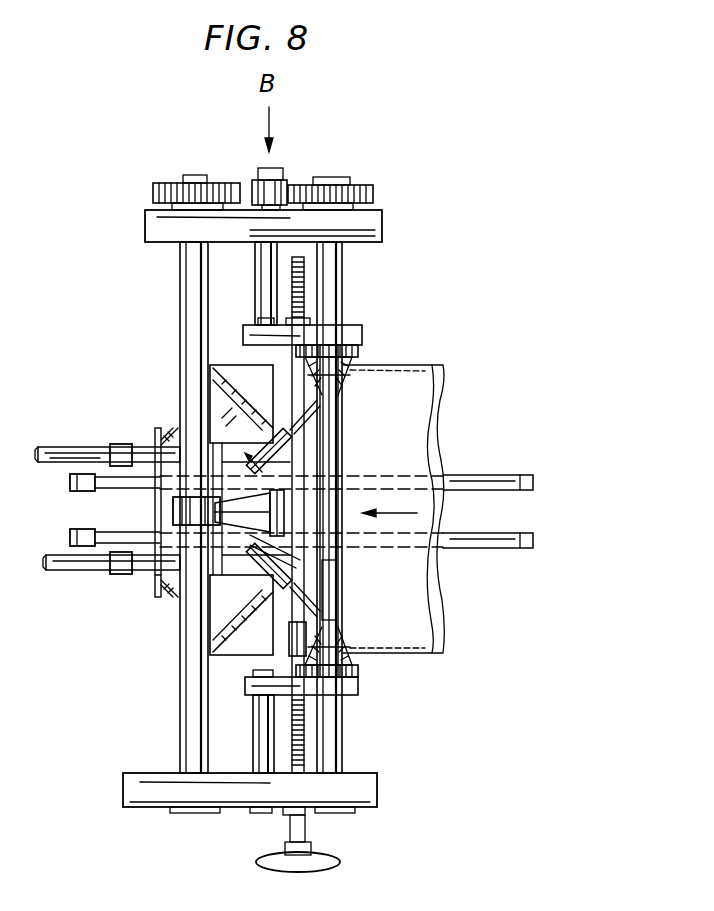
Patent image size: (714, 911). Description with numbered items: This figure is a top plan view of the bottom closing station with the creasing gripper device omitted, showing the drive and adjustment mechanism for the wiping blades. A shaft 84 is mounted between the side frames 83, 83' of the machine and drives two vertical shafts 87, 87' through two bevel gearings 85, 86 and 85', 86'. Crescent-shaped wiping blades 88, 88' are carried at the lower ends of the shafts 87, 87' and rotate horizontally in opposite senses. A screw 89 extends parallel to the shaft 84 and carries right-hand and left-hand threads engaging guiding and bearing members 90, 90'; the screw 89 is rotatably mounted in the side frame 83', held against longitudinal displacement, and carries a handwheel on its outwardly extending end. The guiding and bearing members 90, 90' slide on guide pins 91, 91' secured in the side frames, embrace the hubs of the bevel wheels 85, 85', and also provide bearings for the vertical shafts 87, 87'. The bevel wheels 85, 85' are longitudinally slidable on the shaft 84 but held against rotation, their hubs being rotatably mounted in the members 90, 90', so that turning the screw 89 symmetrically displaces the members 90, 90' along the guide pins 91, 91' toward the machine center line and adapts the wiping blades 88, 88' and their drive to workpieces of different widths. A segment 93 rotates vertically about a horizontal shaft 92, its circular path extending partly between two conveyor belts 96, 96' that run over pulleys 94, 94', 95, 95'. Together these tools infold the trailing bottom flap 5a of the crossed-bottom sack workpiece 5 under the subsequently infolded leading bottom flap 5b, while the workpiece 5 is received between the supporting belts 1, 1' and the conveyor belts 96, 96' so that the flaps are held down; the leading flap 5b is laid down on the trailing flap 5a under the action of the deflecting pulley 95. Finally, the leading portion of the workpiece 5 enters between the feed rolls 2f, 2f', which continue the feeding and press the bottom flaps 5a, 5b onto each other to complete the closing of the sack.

The endless supporting belt 1 is at (488, 465).
The endless supporting belt 1' is at (488, 556).
The feed roll 2f is at (231, 485).
The feed roll 2f' is at (230, 530).
The workpiece 5 is at (440, 391).
The trailing bottom flap 5a is at (236, 576).
The leading bottom flap 5b is at (160, 503).
The side frame 83 is at (282, 205).
The side frame 83' is at (274, 822).
The shaft 84 is at (343, 731).
The bevel wheel 85 is at (351, 363).
The bevel wheel 85' is at (354, 655).
The bevel gear 86 is at (350, 511).
The bevel gear 86' is at (356, 594).
The vertical shaft 87 is at (351, 382).
The vertical shaft 87' is at (360, 627).
The crescent-shaped wiping blade 88 is at (282, 425).
The crescent-shaped wiping blade 88' is at (283, 590).
The screw 89 is at (312, 546).
The guiding and bearing member 90 is at (288, 326).
The guiding and bearing member 90' is at (286, 683).
The guide pin 91 is at (248, 283).
The guide pin 91' is at (246, 734).
The horizontal shaft 92 is at (181, 286).
The segment 93 is at (305, 496).
The pulley 94 is at (162, 486).
The pulley 94' is at (153, 604).
The pulley 95 is at (117, 432).
The pulley 95' is at (112, 582).
The conveyor belt 96 is at (107, 434).
The conveyor belt 96' is at (108, 581).